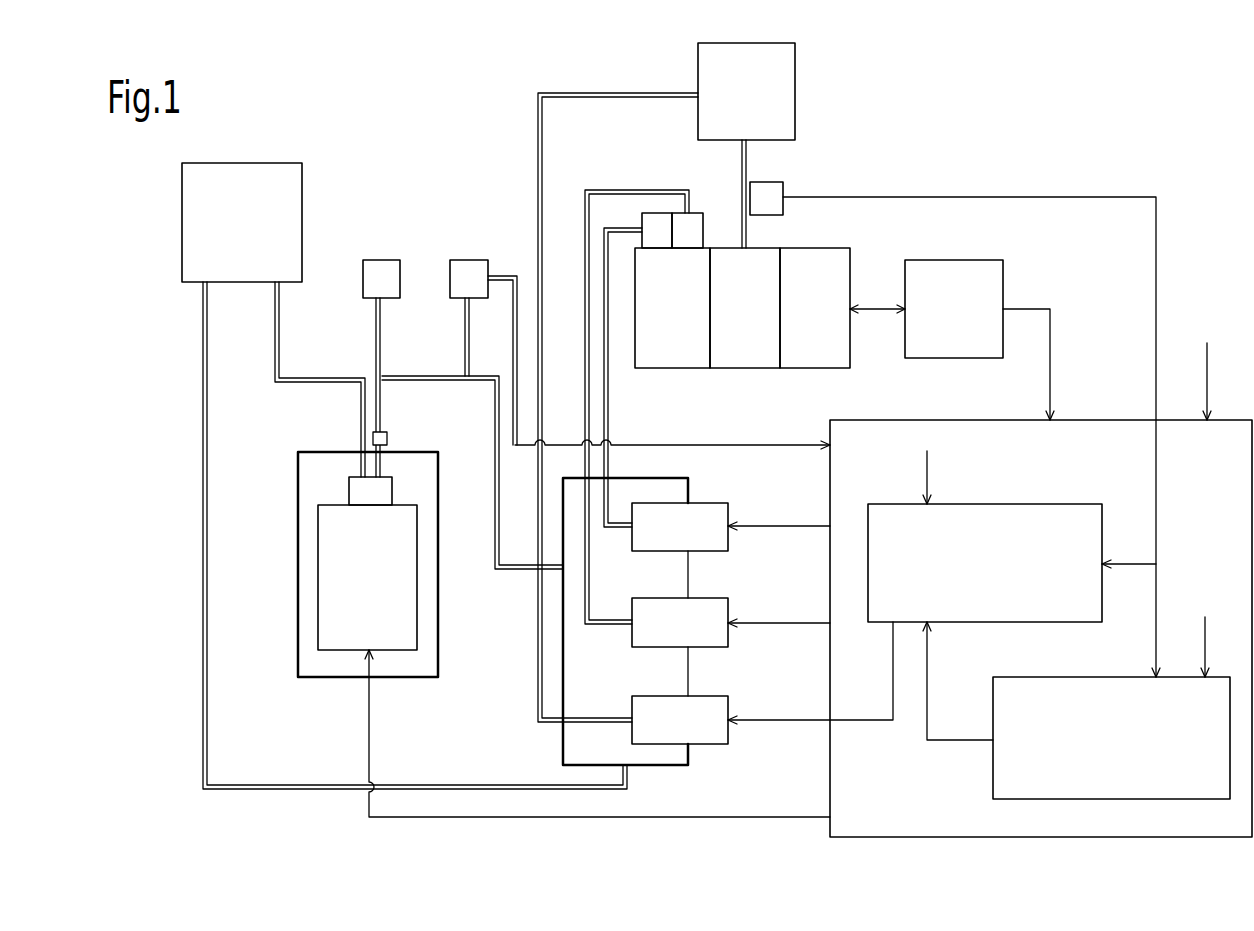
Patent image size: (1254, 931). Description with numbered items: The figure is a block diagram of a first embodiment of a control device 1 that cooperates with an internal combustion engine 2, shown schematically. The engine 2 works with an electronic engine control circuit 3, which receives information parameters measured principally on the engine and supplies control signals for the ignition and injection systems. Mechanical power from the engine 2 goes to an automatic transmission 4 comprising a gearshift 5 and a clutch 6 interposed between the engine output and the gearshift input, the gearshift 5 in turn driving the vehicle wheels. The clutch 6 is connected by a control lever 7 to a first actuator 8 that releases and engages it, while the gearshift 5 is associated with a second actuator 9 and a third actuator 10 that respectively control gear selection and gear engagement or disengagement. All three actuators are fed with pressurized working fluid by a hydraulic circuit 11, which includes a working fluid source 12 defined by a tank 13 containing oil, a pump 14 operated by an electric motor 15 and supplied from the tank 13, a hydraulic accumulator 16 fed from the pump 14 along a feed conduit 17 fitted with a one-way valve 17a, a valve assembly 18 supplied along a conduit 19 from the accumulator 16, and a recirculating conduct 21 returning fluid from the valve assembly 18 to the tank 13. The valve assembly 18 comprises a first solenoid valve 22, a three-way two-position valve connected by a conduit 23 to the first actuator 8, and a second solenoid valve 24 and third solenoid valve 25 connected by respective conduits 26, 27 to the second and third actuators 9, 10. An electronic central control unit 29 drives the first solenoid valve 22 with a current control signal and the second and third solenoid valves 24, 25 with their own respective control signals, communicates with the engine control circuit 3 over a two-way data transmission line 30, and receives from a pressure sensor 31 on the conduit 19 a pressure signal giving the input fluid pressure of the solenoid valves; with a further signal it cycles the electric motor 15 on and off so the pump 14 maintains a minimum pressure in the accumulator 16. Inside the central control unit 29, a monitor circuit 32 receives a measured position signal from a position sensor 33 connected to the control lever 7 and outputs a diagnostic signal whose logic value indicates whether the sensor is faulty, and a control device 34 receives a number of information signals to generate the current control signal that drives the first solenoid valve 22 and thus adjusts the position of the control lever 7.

The control device 1 is at (1152, 143).
The engine 2 is at (805, 370).
The electronic engine control circuit 3 is at (997, 280).
The automatic transmission 4 is at (697, 173).
The gearshift 5 is at (680, 370).
The clutch 6 is at (738, 370).
The control lever 7 is at (752, 230).
The first actuator 8 is at (795, 93).
The second actuator 9 is at (697, 222).
The third actuator 10 is at (650, 225).
The hydraulic circuit 11 is at (486, 208).
The working fluid source 12 is at (281, 137).
The tank 13 is at (248, 178).
The pump 14 is at (376, 492).
The electric motor 15 is at (328, 628).
The hydraulic accumulator 16 is at (371, 269).
The feed conduit 17 is at (384, 410).
The one-way valve 17a is at (390, 440).
The valve assembly 18 is at (608, 635).
The conduit 19 is at (492, 428).
The recirculating conduct 21 is at (290, 785).
The first solenoid valve 22 is at (712, 730).
The conduit 23 is at (538, 165).
The second solenoid valve 24 is at (718, 630).
The third solenoid valve 25 is at (714, 517).
The conduit 26 is at (612, 192).
The conduit 27 is at (608, 388).
The electronic central control unit 29 is at (808, 575).
The two-way data transmission line 30 is at (1050, 370).
The pressure sensor 31 is at (466, 269).
The monitor circuit 32 is at (993, 790).
The position sensor 33 is at (770, 185).
The control device 34 is at (1026, 518).